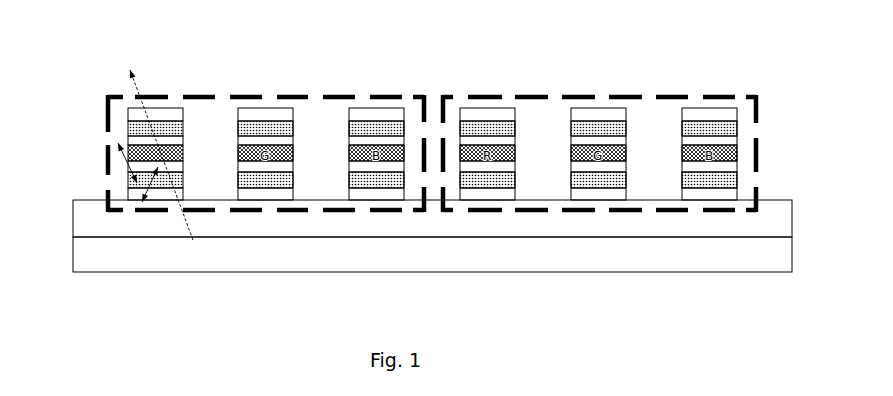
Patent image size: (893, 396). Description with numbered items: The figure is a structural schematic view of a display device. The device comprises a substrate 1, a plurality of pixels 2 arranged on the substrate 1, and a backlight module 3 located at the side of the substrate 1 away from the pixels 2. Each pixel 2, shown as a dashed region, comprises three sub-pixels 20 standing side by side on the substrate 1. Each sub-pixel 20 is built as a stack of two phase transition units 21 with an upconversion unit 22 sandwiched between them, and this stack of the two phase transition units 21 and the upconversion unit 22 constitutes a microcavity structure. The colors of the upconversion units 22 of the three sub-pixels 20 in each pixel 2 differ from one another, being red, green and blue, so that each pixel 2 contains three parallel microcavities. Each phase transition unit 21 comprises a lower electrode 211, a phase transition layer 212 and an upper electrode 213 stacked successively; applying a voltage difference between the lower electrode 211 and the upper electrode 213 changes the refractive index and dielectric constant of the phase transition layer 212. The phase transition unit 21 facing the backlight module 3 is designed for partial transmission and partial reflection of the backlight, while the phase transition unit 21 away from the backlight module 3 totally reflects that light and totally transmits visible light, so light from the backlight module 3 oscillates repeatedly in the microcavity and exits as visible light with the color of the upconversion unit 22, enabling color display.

The substrate 1 is at (582, 223).
The pixel 2 is at (203, 93).
The backlight module 3 is at (475, 252).
The sub-pixel 20 is at (99, 155).
The phase transition unit 21 is at (108, 154).
The upconversion unit 22 is at (128, 155).
The lower electrode 211 is at (128, 140).
The phase transition layer 212 is at (128, 127).
The upper electrode 213 is at (128, 114).